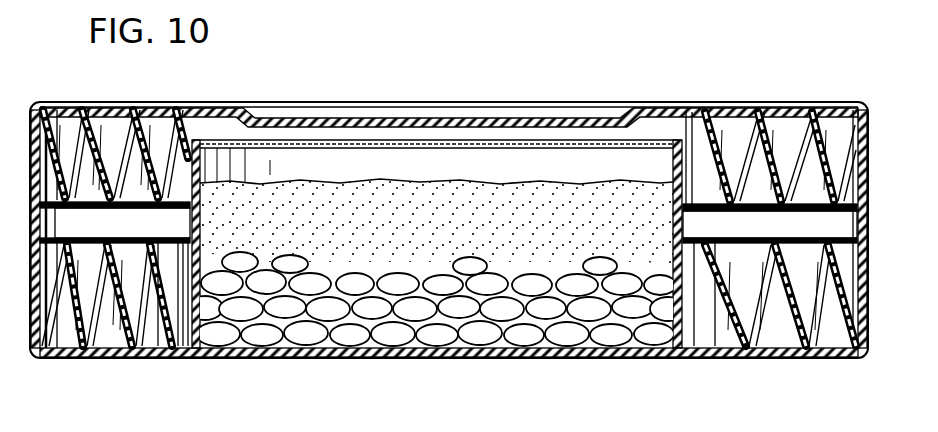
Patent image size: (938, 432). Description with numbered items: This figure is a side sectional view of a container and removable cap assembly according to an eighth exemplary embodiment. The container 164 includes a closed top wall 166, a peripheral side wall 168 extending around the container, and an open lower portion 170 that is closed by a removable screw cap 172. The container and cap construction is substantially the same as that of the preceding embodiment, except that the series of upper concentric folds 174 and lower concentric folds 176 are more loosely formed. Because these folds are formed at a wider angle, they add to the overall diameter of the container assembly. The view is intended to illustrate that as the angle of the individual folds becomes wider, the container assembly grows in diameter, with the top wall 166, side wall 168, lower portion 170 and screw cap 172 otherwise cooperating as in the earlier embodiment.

The container 164 is at (671, 88).
The closed top wall 166 is at (457, 120).
The peripheral side wall 168 is at (868, 194).
The open lower portion 170 is at (698, 368).
The removable screw cap 172 is at (507, 366).
The upper concentric folds 174 is at (142, 105).
The lower concentric folds 176 is at (83, 366).